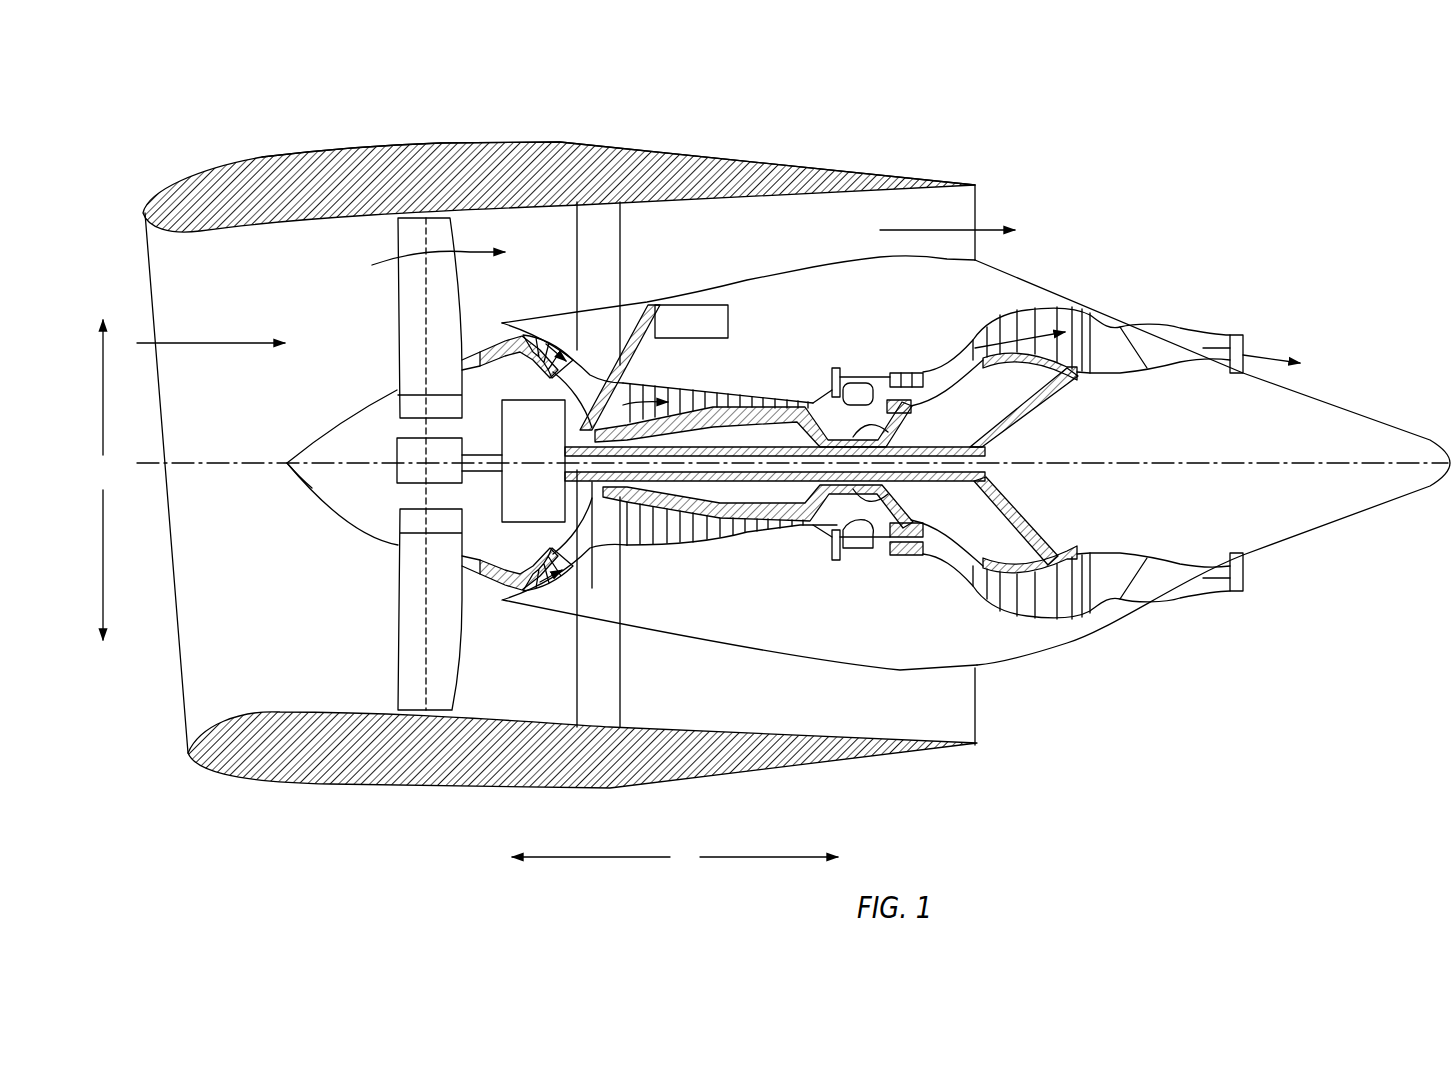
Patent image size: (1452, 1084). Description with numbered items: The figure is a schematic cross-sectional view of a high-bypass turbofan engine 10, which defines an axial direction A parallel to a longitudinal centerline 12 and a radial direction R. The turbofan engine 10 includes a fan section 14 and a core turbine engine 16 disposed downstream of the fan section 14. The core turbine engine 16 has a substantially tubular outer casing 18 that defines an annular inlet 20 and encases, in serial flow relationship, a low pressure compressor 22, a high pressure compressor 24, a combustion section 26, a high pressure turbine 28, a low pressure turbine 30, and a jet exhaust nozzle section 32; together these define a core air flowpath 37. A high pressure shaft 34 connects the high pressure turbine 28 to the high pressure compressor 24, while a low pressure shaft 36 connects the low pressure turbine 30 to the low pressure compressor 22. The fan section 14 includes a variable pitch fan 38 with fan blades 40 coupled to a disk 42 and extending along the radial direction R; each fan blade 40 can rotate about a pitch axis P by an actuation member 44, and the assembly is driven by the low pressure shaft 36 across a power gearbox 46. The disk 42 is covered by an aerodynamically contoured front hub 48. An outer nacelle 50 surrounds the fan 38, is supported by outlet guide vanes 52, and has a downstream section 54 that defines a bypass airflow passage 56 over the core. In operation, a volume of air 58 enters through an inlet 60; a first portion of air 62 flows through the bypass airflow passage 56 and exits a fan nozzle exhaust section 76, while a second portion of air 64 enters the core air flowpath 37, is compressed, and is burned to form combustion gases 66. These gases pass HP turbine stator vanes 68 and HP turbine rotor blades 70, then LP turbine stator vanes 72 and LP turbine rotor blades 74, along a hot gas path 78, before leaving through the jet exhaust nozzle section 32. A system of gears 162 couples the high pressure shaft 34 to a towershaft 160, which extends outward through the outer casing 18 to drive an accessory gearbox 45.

The turbofan engine 10 is at (1146, 152).
The longitudinal centerline 12 is at (1183, 463).
The fan section 14 is at (348, 238).
The core turbine engine 16 is at (762, 320).
The outer casing 18 is at (807, 660).
The annular inlet 20 is at (515, 590).
The low pressure compressor 22 is at (571, 553).
The high pressure compressor 24 is at (658, 535).
The combustion section 26 is at (857, 542).
The high pressure turbine 28 is at (930, 547).
The low pressure turbine 30 is at (1073, 618).
The jet exhaust nozzle section 32 is at (1243, 340).
The high pressure shaft 34 is at (893, 425).
The low pressure shaft 36 is at (983, 436).
The core air flowpath 37 is at (610, 532).
The variable pitch fan 38 is at (352, 524).
The fan blades 40 is at (397, 660).
The disk 42 is at (410, 407).
The actuation member 44 is at (395, 447).
The accessory gearbox 45 is at (691, 321).
The power gearbox 46 is at (533, 461).
The front hub 48 is at (303, 480).
The outer nacelle 50 is at (448, 790).
The outlet guide vanes 52 is at (620, 230).
The downstream section 54 is at (910, 172).
The bypass airflow passage 56 is at (738, 269).
The volume of air 58 is at (212, 343).
The inlet 60 is at (180, 710).
The first portion of air 62 is at (417, 263).
The second portion of air 64 is at (485, 338).
The combustion gases 66 is at (1030, 330).
The HP turbine stator vanes 68 is at (880, 540).
The HP turbine rotor blades 70 is at (985, 510).
The LP turbine stator vanes 72 is at (983, 590).
The LP turbine rotor blades 74 is at (995, 610).
The fan nozzle exhaust section 76 is at (960, 204).
The hot gas path 78 is at (955, 345).
The towershaft 160 is at (643, 362).
The system of gears 162 is at (594, 548).
The pitch axis P is at (432, 233).
The radial direction R is at (102, 480).
The axial direction A is at (675, 857).